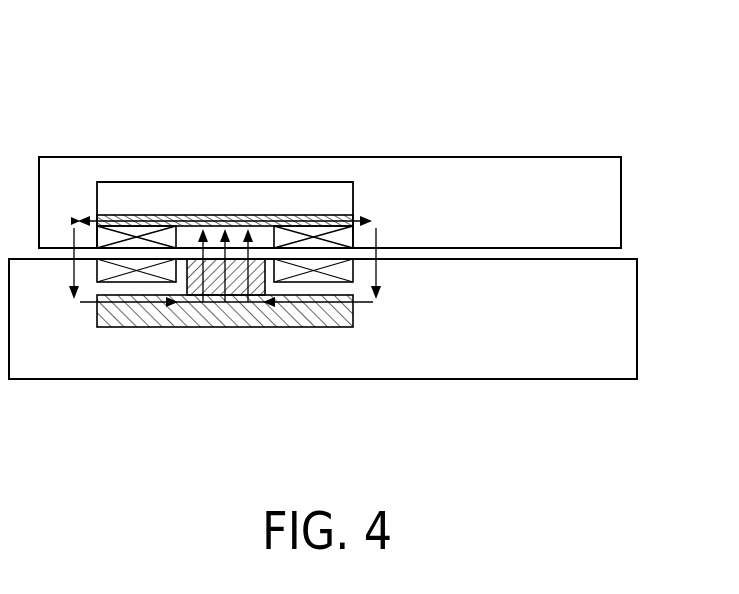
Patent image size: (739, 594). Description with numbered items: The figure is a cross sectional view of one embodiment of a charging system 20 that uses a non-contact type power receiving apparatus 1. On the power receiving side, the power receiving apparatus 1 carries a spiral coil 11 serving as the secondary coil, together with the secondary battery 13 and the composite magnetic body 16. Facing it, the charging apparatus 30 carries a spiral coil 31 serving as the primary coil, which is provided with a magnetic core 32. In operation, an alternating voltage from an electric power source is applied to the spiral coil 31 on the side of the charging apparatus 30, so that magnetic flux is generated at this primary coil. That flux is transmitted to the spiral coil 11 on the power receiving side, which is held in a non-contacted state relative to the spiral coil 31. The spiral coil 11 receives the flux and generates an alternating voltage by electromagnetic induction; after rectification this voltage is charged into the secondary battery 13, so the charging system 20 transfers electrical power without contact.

The charging system 20 is at (504, 124).
The power receiving apparatus 1 is at (621, 203).
The charging apparatus 30 is at (637, 320).
The secondary battery 13 is at (262, 190).
The composite magnetic body 16 is at (200, 220).
The spiral coil (secondary coil) 11 is at (318, 226).
The spiral coil (primary coil) 31 is at (315, 275).
The magnetic core 32 is at (236, 322).